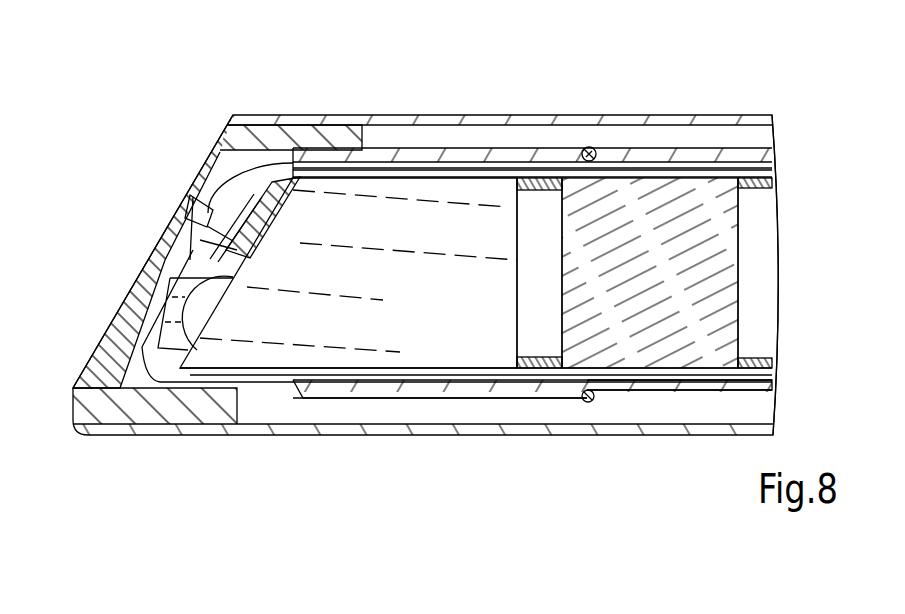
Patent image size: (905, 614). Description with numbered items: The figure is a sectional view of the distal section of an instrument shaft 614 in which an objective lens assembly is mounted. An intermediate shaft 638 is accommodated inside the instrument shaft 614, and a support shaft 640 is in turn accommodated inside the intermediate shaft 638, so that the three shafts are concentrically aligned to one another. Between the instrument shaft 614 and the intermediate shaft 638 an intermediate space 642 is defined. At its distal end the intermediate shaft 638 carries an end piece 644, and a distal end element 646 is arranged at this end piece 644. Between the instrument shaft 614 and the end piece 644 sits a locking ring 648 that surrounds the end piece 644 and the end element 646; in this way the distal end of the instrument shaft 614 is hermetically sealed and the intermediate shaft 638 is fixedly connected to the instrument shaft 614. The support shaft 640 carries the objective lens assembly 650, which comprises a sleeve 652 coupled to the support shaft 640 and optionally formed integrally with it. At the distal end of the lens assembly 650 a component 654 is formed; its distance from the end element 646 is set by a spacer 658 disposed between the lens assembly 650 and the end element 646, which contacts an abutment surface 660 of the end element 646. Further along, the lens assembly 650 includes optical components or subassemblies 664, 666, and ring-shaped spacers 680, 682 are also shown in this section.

The instrument shaft 614 is at (260, 427).
The intermediate shaft 638 is at (643, 387).
The support shaft 640 is at (703, 160).
The intermediate space 642 is at (320, 413).
The end piece 644 is at (363, 393).
The distal end element 646 is at (137, 315).
The locking ring 648 is at (203, 410).
The objective lens assembly 650 is at (440, 398).
The sleeve 652 is at (655, 178).
The component 654 is at (193, 228).
The spacer 658 is at (223, 158).
The abutment surface 660 is at (150, 360).
The component or subassembly 664 is at (393, 257).
The component or subassembly 666 is at (587, 223).
The spacer 680 is at (543, 363).
The spacer 682 is at (778, 128).